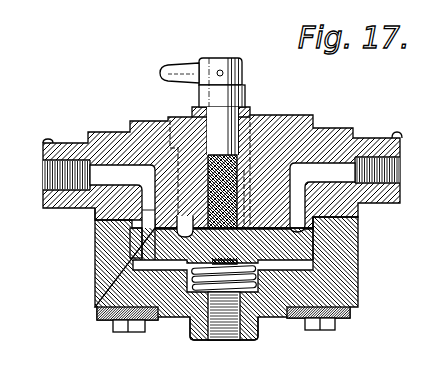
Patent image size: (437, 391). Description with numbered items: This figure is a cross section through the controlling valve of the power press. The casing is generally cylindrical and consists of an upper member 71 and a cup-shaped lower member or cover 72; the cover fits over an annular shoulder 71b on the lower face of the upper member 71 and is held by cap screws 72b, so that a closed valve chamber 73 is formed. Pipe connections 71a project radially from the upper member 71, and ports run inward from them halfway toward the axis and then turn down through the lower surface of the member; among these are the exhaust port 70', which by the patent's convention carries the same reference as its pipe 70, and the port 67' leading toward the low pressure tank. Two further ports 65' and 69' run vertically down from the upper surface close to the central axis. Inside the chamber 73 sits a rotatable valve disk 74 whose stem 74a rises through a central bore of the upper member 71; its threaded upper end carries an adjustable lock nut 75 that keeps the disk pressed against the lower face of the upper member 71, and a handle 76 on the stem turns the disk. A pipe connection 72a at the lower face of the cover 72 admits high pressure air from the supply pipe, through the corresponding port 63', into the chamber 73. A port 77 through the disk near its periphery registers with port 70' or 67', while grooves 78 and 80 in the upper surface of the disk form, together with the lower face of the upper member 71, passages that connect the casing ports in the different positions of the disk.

The valve stem lower end 63' is at (222, 335).
The port 65' is at (230, 158).
The port 67' is at (336, 197).
The port 69' is at (199, 104).
The inlet port 70 is at (83, 211).
The exhaust port 70' is at (74, 221).
The upper member 71 is at (313, 122).
The pipe connections 71a is at (80, 143).
The annular shoulder 71b is at (147, 212).
The cover 72 is at (347, 297).
The pipe connection 72a is at (258, 338).
The cap screws 72b is at (329, 348).
The valve chamber 73 is at (183, 265).
The valve disk 74 is at (318, 247).
The valve stem 74a is at (243, 101).
The adjustable nut 75 is at (218, 97).
The handle 76 is at (173, 76).
The port 77 is at (150, 243).
The outer passage 78 is at (381, 258).
The passage 80 is at (96, 297).